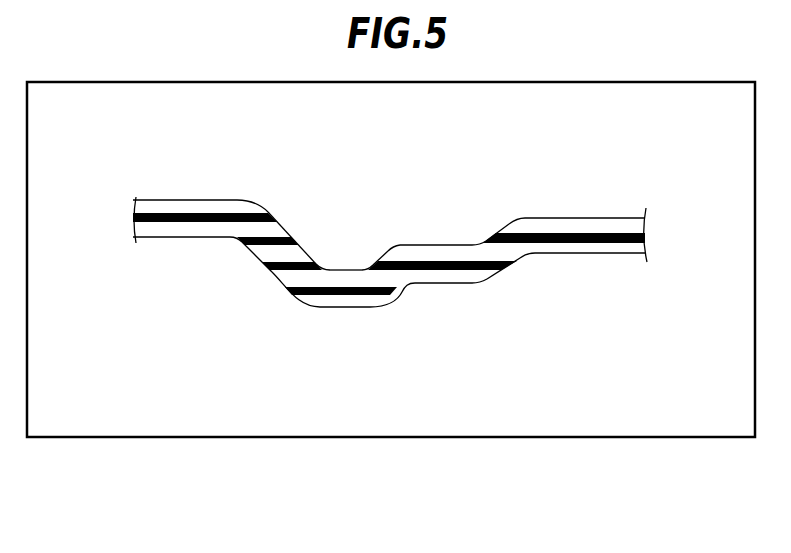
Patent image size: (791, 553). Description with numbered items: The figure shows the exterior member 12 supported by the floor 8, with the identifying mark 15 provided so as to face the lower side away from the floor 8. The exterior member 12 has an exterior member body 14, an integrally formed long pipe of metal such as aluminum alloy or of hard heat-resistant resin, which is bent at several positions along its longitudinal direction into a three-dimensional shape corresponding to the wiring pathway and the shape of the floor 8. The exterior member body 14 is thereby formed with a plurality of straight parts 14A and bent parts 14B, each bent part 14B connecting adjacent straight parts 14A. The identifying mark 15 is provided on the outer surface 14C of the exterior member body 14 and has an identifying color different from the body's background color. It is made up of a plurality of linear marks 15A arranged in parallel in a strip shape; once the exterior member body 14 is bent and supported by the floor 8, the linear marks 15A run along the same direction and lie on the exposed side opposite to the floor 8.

The floor 8 is at (625, 439).
The exterior member 12 is at (399, 252).
The exterior member body 14 is at (399, 252).
The straight part 14A is at (437, 283).
The bent part 14B is at (240, 200).
The outer surface 14C is at (583, 217).
The identifying mark 15 is at (389, 265).
The linear mark 15A is at (170, 222).